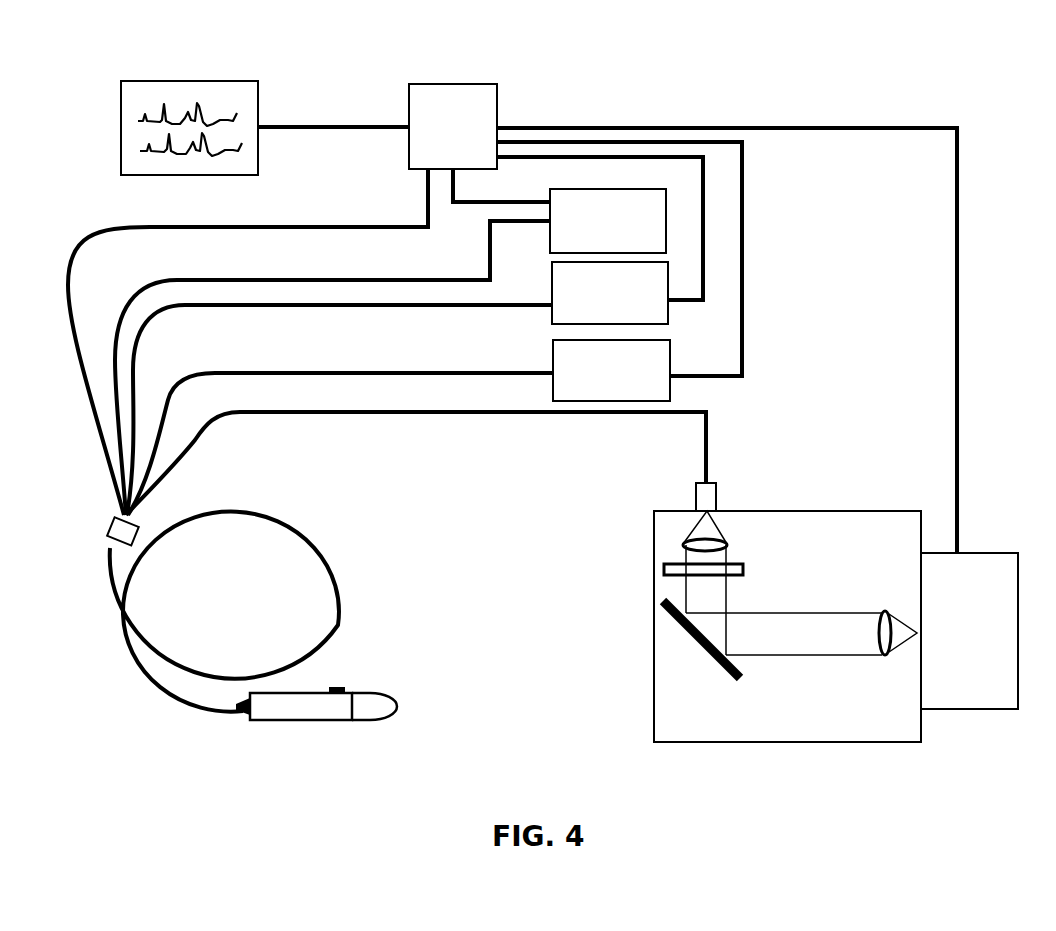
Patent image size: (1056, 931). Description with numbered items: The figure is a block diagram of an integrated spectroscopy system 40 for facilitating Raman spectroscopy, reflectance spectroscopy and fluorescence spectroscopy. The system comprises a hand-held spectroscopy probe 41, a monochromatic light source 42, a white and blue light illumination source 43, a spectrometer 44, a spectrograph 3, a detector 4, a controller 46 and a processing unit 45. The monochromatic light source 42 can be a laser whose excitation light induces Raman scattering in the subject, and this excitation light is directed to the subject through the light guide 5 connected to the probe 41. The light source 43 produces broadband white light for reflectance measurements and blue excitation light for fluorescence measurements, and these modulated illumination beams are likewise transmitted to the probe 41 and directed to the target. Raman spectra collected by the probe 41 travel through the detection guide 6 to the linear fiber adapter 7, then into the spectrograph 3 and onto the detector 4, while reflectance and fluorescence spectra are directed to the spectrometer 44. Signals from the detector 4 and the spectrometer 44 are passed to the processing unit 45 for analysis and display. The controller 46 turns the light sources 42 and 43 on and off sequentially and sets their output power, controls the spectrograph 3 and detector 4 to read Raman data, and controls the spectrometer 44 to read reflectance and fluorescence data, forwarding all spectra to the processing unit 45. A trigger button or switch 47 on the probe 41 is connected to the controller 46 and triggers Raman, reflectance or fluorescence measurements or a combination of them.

The spectrograph 3 is at (644, 550).
The detector 4 is at (969, 631).
The light guide 5 is at (349, 279).
The detection guide 6 is at (401, 421).
The linear fiber adapter 7 is at (722, 496).
The integrated spectroscopy system 40 is at (950, 92).
The hand-held spectroscopy probe 41 is at (395, 686).
The monochromatic light source 42 is at (559, 211).
The white and blue light illumination source 43 is at (600, 240).
The spectrometer 44 is at (619, 271).
The processing unit 45 is at (232, 80).
The controller 46 is at (377, 126).
The trigger button or switch 47 is at (345, 682).